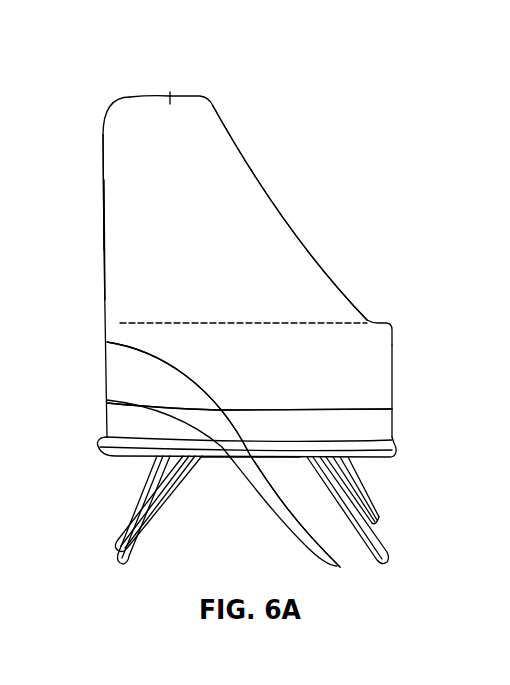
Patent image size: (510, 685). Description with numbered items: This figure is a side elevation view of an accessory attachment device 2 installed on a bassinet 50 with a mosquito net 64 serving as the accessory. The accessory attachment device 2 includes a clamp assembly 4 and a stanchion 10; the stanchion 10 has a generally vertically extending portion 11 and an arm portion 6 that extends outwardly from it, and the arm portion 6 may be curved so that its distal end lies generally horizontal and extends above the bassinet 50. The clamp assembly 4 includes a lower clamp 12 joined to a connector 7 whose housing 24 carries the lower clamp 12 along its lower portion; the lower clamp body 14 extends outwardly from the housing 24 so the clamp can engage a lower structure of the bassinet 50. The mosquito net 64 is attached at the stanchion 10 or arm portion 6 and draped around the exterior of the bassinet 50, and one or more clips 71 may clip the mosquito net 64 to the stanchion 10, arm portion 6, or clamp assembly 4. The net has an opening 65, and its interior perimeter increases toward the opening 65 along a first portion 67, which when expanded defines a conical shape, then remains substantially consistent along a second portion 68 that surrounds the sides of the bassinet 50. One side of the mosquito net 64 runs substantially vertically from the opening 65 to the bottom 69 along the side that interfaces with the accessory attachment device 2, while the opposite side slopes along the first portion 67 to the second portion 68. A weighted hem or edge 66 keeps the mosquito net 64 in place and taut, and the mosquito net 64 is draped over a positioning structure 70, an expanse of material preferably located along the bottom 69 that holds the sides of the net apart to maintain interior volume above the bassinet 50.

The accessory attachment device 2 is at (107, 253).
The clamp assembly 4 is at (105, 378).
The arm portion 6 is at (119, 97).
The connector 7 is at (107, 413).
The stanchion 10 is at (103, 178).
The vertically extending portion 11 is at (103, 213).
The lower clamp 12 is at (99, 441).
The lower clamp body 14 is at (107, 326).
The housing 24 is at (107, 360).
The bassinet 50 is at (392, 322).
The mosquito net 64 is at (215, 140).
The opening 65 is at (240, 470).
The weighted hem or edge 66 is at (125, 457).
The first portion 67 is at (247, 181).
The second portion 68 is at (383, 381).
The bottom 69 is at (142, 95).
The positioning structure 70 is at (170, 104).
The clip 71 is at (236, 462).